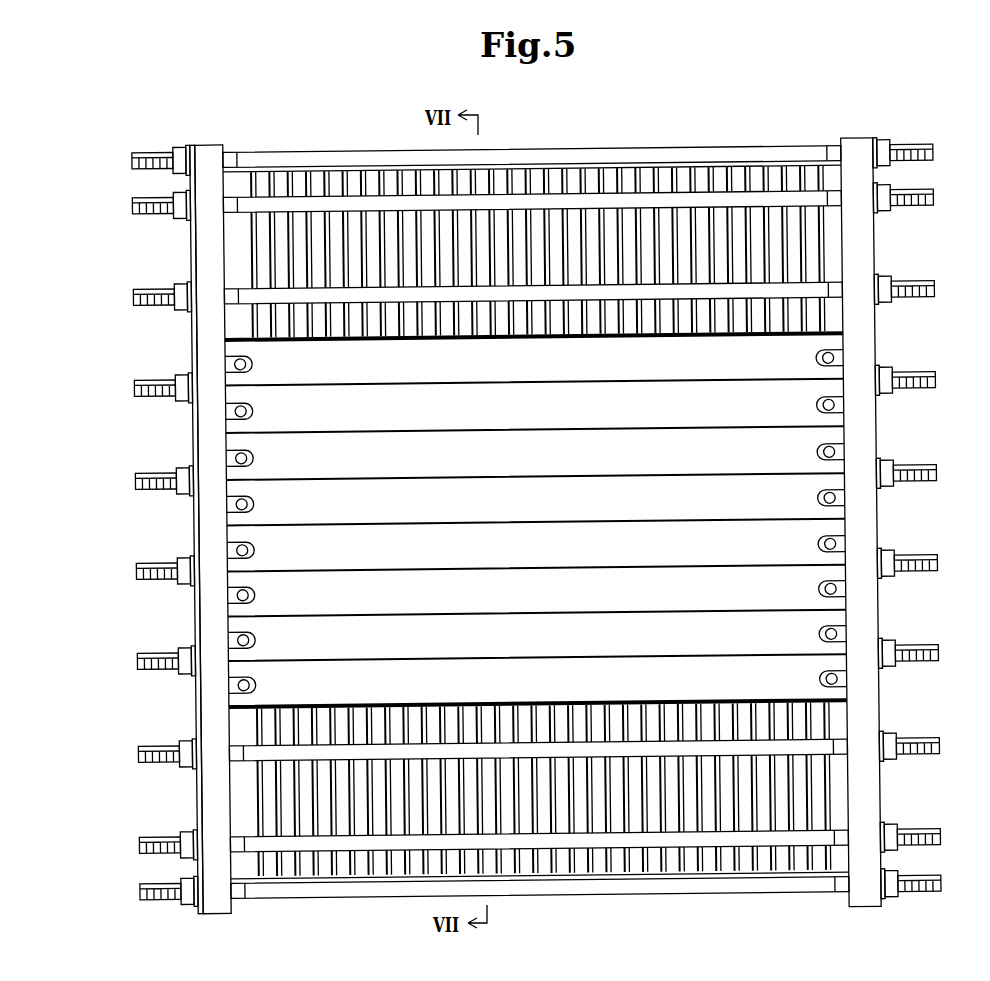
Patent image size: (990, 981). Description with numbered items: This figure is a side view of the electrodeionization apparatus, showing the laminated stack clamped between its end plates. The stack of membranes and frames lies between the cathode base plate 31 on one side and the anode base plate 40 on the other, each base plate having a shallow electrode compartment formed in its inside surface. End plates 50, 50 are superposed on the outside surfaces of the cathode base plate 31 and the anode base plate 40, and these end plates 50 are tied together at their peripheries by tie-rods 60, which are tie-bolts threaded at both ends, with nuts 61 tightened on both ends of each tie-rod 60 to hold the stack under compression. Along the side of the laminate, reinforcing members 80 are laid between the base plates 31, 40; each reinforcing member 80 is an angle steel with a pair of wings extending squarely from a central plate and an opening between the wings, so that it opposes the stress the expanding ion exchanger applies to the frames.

The cathode base plate 31 is at (232, 264).
The anode base plate 40 is at (835, 247).
The end plate 50 is at (215, 520).
The tie-rod 60 is at (134, 161).
The nut 61 is at (189, 145).
The reinforcing member 80 is at (505, 421).